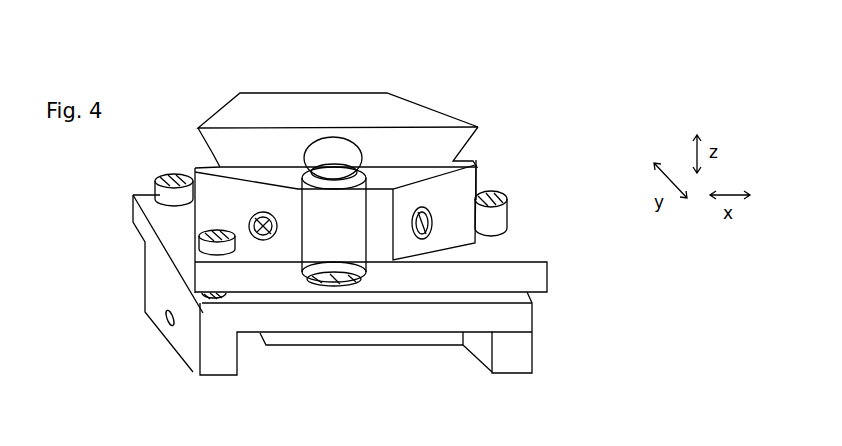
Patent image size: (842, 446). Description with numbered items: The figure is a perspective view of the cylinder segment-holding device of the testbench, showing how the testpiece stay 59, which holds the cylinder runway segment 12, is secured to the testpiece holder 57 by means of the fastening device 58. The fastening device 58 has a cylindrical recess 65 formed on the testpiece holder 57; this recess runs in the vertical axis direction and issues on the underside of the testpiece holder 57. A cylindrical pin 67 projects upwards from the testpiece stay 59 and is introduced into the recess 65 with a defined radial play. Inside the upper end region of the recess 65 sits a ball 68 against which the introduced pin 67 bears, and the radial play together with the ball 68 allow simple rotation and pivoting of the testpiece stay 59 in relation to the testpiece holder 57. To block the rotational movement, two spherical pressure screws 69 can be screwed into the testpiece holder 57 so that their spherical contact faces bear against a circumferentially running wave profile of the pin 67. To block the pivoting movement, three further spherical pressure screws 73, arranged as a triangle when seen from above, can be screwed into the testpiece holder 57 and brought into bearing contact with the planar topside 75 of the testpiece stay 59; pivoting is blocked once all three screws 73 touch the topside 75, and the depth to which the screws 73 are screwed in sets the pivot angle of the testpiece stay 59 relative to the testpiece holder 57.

The cylinder runway segment 12 is at (403, 347).
The testpiece holder 57 is at (487, 262).
The fastening device 58 is at (488, 136).
The testpiece stay 59 is at (503, 330).
The cylindrical recess 65 is at (372, 155).
The cylindrical pin 67 is at (331, 290).
The ball 68 is at (333, 148).
The spherical pressure screws 69 is at (253, 233).
The spherical pressure screws 73 is at (172, 200).
The planar topside 75 is at (522, 258).